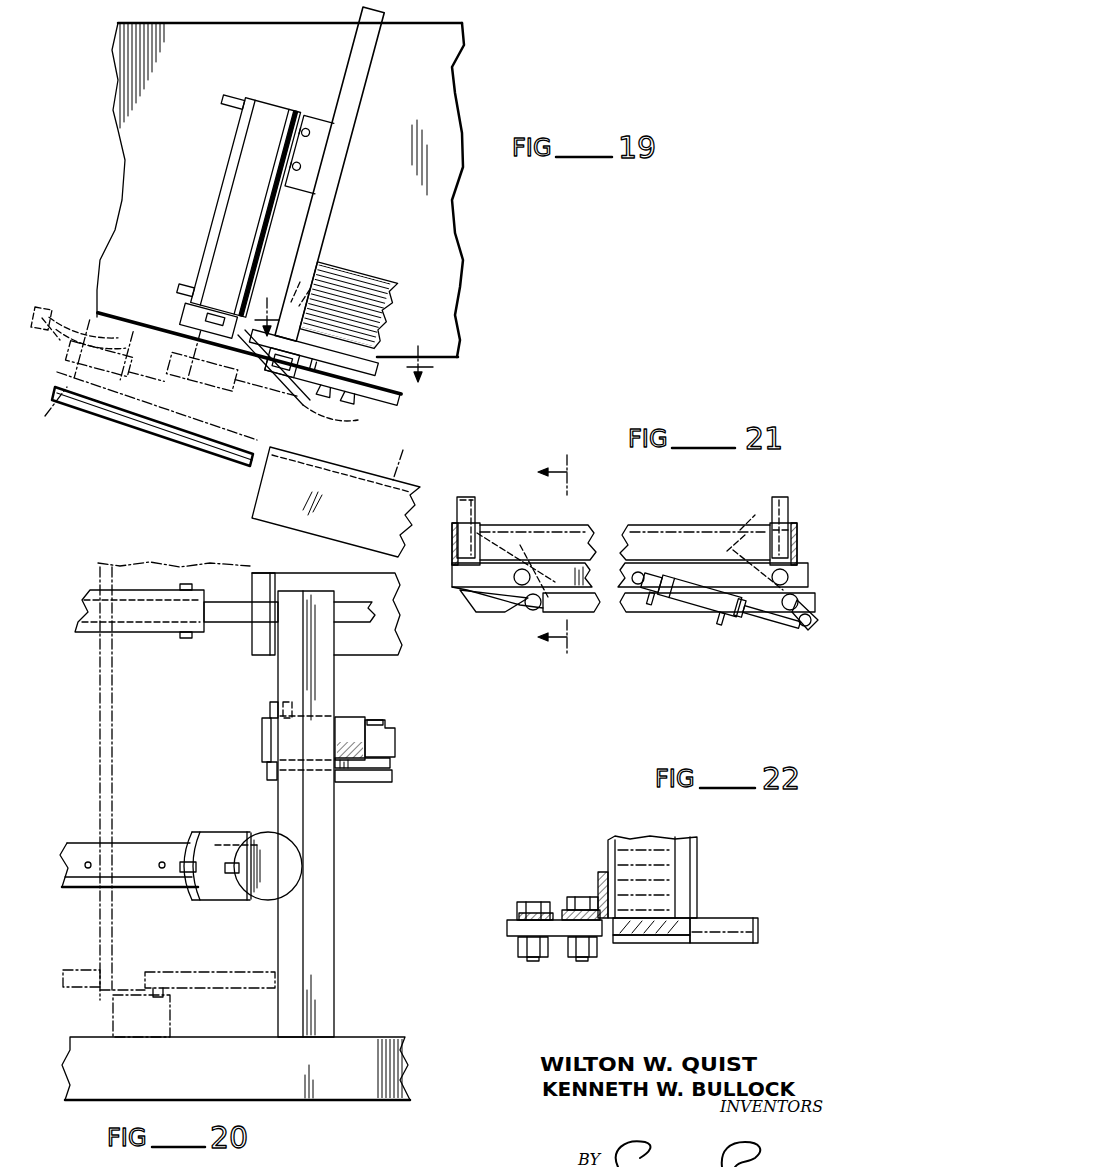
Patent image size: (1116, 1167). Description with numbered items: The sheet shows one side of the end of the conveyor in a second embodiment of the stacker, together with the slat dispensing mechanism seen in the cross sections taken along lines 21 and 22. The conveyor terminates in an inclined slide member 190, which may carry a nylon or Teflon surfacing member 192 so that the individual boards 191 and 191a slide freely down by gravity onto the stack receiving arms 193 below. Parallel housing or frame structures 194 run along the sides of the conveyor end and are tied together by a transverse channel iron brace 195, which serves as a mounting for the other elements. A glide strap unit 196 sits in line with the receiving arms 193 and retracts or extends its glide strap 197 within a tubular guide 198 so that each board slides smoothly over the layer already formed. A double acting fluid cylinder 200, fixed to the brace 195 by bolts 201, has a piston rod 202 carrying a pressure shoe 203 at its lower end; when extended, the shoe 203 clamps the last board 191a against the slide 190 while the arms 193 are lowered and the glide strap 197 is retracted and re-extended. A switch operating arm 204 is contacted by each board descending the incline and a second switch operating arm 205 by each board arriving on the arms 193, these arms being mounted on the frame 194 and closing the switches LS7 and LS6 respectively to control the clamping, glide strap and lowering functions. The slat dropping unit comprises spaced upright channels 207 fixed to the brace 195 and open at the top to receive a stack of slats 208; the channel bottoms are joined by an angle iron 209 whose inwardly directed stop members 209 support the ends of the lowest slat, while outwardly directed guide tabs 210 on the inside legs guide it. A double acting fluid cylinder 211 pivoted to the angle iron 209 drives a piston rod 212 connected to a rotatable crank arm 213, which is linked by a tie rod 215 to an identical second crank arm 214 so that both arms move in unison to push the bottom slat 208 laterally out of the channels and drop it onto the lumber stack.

In FIG. 19, the inclined slide member 190 is at (152, 432).
In FIG. 20, the inclined slide member 190 is at (70, 884).
In FIG. 19, the board 191 is at (418, 442).
In FIG. 19, the board 191a is at (218, 432).
In FIG. 20, the board 191a is at (190, 771).
In FIG. 19, the surfacing member 192 is at (112, 405).
In FIG. 20, the surfacing member 192 is at (90, 845).
In FIG. 19, the stack receiving arm 193 is at (348, 522).
In FIG. 20, the stack receiving arm 193 is at (385, 640).
In FIG. 19, the housing or frame structure 194 is at (150, 88).
In FIG. 20, the housing or frame structure 194 is at (353, 1088).
In FIG. 19, the channel iron brace 195 is at (315, 115).
In FIG. 20, the channel iron brace 195 is at (325, 966).
In FIG. 20, the glide strap unit 196 is at (86, 649).
In FIG. 20, the glide strap 197 is at (226, 610).
In FIG. 20, the tubular guide 198 is at (93, 597).
In FIG. 19, the double acting fluid cylinder 200 is at (232, 236).
In FIG. 20, the double acting fluid cylinder 200 is at (215, 843).
In FIG. 19, the bolt 201 is at (297, 179).
In FIG. 19, the piston rod 202 is at (186, 302).
In FIG. 19, the pressure shoe 203 is at (192, 332).
In FIG. 19, the switch operating arm 204 is at (110, 358).
In FIG. 20, the switch operating arm 204 is at (82, 969).
In FIG. 19, the second switch operating arm 205 is at (297, 384).
In FIG. 20, the second switch operating arm 205 is at (198, 975).
In FIG. 20, the upright channel 207 is at (358, 690).
In FIG. 21, the upright channel 207 is at (455, 537).
In FIG. 22, the upright channel 207 is at (609, 852).
In FIG. 19, the slat 208 is at (388, 283).
In FIG. 20, the slat 208 is at (392, 736).
In FIG. 22, the slat 208 is at (628, 943).
In FIG. 19, the angle iron / stop member 209 is at (311, 361).
In FIG. 20, the angle iron / stop member 209 is at (376, 782).
In FIG. 21, the angle iron / stop member 209 is at (475, 540).
In FIG. 22, the angle iron / stop member 209 is at (600, 871).
In FIG. 20, the guide tab 210 is at (268, 702).
In FIG. 21, the guide tab 210 is at (470, 510).
In FIG. 22, the guide tab 210 is at (730, 918).
In FIG. 21, the double acting fluid cylinder 211 is at (703, 602).
In FIG. 21, the piston rod 212 is at (773, 612).
In FIG. 21, the crank arm 213 is at (808, 610).
In FIG. 19, the second crank arm 214 is at (318, 373).
In FIG. 21, the second crank arm 214 is at (477, 606).
In FIG. 19, the tie rod 215 is at (398, 387).
In FIG. 21, the tie rod 215 is at (641, 602).
In FIG. 19, the section line 21— 21 is at (344, 331).
In FIG. 21, the section line 22— 22 is at (566, 555).
In FIG. 19, the switch LS6 is at (289, 282).
In FIG. 20, the switch LS6 is at (168, 1018).
In FIG. 19, the switch LS7 is at (47, 312).